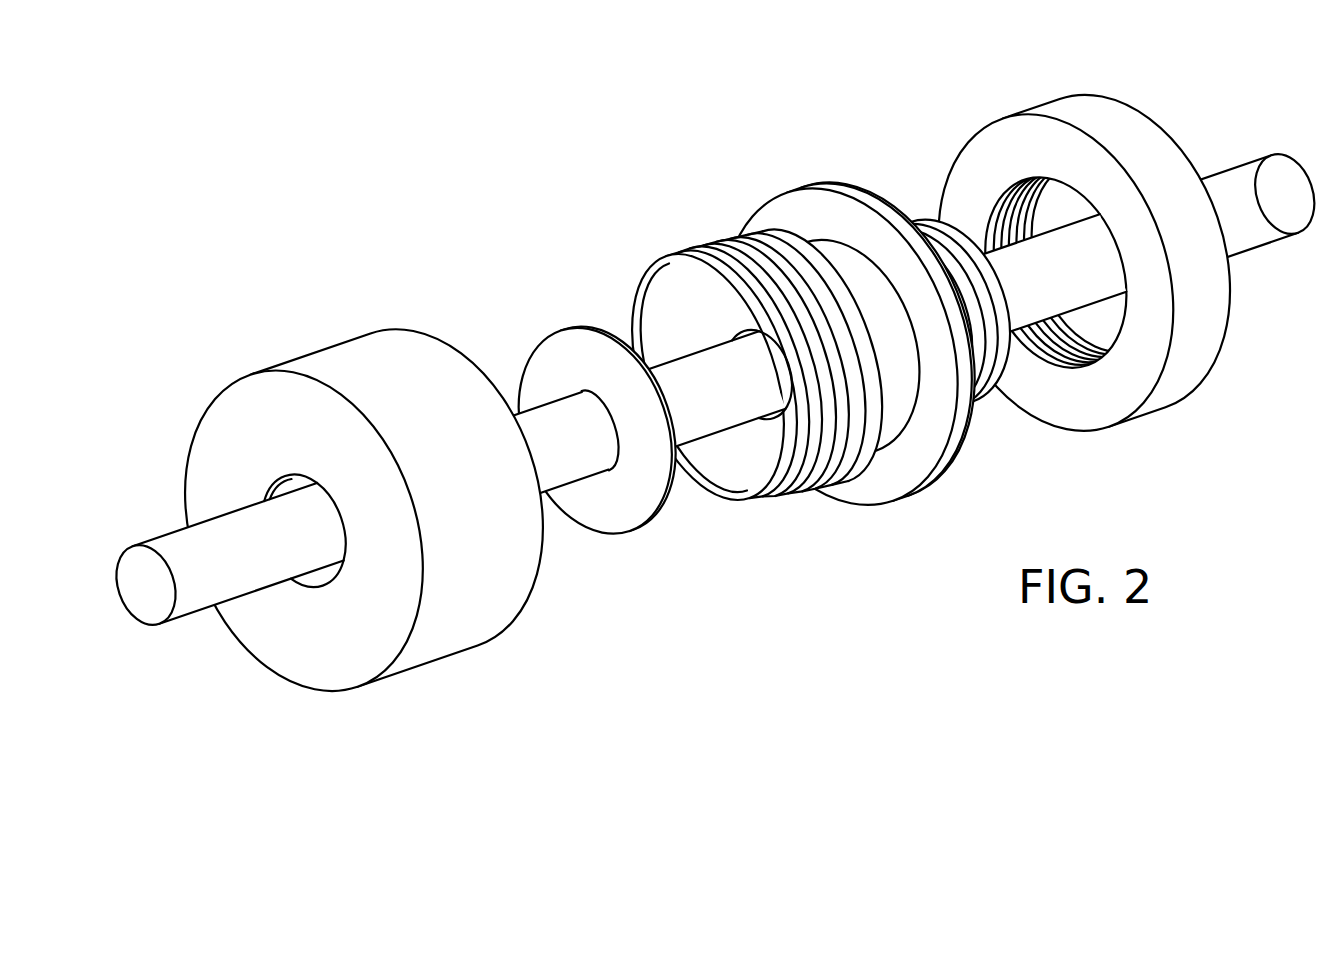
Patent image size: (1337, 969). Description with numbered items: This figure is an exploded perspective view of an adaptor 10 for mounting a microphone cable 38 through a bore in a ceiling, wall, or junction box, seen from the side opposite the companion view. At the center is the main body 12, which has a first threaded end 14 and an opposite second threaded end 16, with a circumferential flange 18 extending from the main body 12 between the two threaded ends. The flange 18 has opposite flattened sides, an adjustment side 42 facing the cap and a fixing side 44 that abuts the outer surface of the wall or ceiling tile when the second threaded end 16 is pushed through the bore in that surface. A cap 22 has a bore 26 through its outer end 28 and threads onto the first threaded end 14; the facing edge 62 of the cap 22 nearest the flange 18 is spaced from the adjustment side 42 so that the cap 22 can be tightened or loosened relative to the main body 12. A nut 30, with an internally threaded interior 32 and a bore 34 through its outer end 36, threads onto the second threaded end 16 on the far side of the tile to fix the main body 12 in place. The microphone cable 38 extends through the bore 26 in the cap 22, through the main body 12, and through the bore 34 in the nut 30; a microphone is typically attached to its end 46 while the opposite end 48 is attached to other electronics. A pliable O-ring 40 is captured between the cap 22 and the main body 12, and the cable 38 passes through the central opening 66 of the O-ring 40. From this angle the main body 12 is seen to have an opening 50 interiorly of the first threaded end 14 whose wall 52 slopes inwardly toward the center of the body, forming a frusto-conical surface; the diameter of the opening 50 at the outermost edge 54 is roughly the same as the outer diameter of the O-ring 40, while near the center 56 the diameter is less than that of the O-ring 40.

The adaptor 10 is at (715, 375).
The main body 12 is at (847, 314).
The first threaded end 14 is at (822, 467).
The second threaded end 16 is at (937, 217).
The circumferential flange 18 is at (940, 467).
The cap 22 is at (363, 490).
The bore 26 is at (310, 582).
The outer end 28 is at (227, 410).
The nut 30 is at (1084, 253).
The internally threaded interior 32 is at (1070, 347).
The bore 34 is at (1017, 203).
The outer end 36 is at (1150, 105).
The microphone cable 38 is at (1243, 177).
The O-ring 40 is at (640, 502).
The adjustment side 42 is at (768, 215).
The fixing side 44 is at (867, 185).
The end 46 is at (153, 607).
The opposite end 48 is at (1277, 152).
The opening 50 is at (724, 395).
The wall 52 is at (750, 462).
The outermost edge 54 is at (653, 307).
The center 56 is at (733, 330).
The facing edge 62 is at (428, 340).
The central opening 66 is at (577, 392).